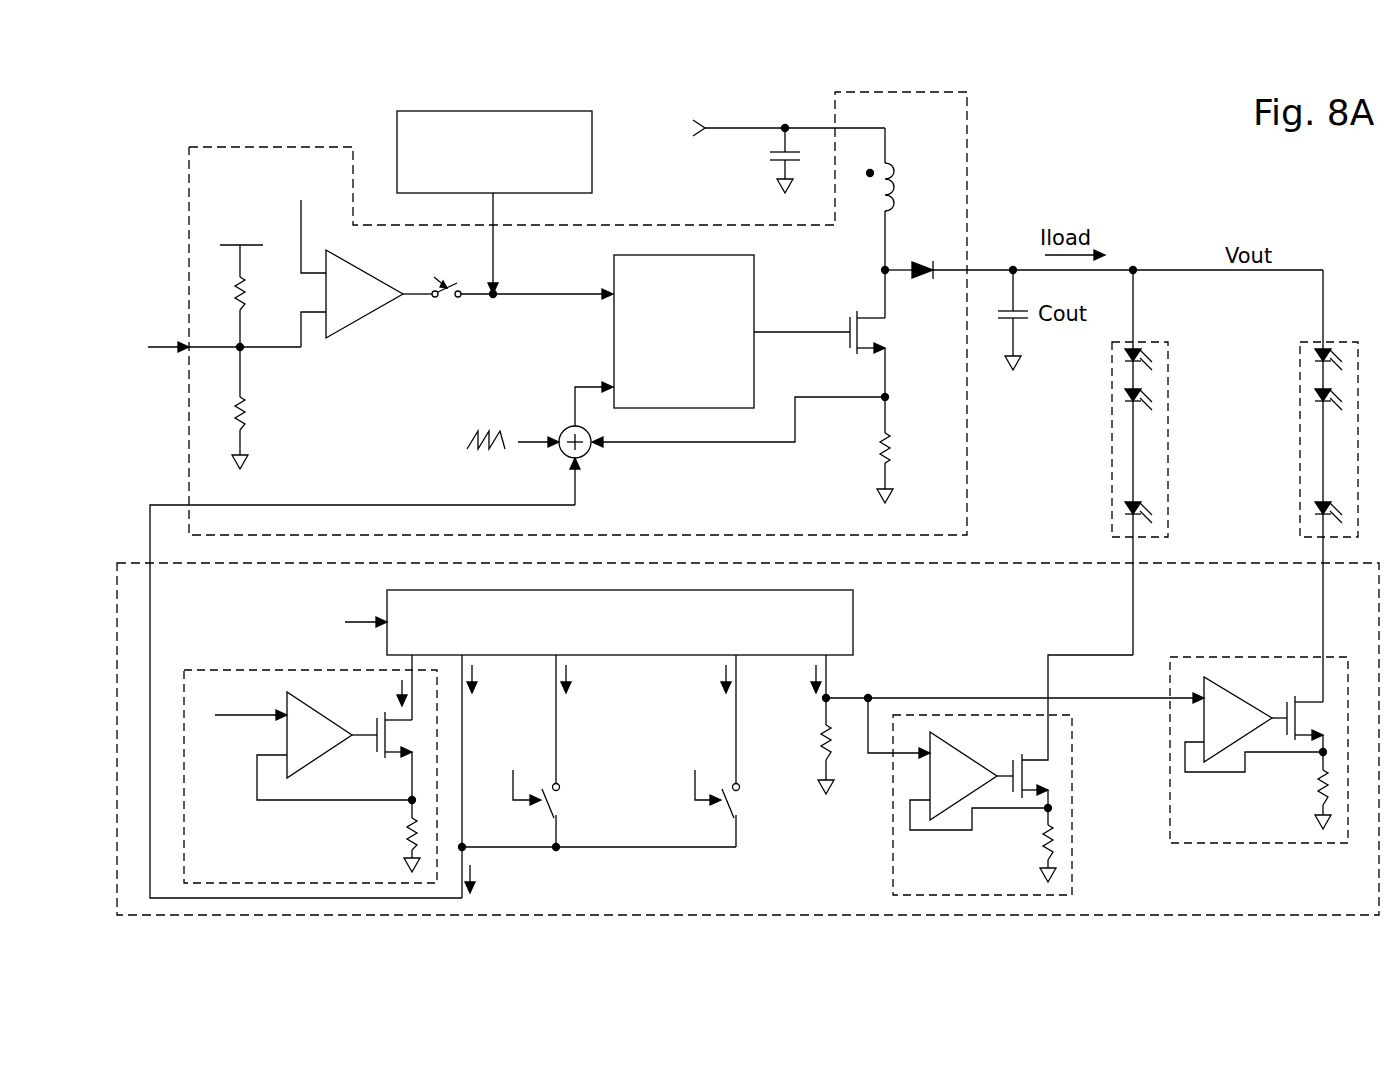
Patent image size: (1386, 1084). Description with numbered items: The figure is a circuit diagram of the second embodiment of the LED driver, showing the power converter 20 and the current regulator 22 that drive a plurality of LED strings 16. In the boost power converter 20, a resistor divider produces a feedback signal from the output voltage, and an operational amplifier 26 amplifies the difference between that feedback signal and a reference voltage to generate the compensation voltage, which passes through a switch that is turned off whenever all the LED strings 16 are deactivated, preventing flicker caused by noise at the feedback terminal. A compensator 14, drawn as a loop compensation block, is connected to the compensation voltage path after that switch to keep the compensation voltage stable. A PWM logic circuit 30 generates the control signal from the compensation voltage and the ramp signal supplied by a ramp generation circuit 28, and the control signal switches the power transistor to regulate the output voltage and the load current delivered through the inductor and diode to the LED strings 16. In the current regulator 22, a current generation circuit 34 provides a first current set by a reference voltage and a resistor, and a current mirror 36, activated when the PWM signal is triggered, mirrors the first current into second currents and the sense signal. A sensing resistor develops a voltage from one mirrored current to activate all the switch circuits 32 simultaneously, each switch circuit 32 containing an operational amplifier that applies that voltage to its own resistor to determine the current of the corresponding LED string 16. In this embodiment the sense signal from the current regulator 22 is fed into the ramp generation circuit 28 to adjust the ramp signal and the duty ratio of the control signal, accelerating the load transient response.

The compensator 14 is at (592, 150).
The LED strings 16 is at (1168, 385).
The power converter 20 is at (967, 425).
The current regulator 22 is at (1030, 560).
The operational amplifier 26 is at (362, 338).
The ramp generation circuit 28 is at (588, 455).
The PWM logic circuit 30 is at (683, 253).
The switch circuits 32 is at (1072, 828).
The current generation circuit 34 is at (228, 668).
The current mirror 36 is at (853, 618).